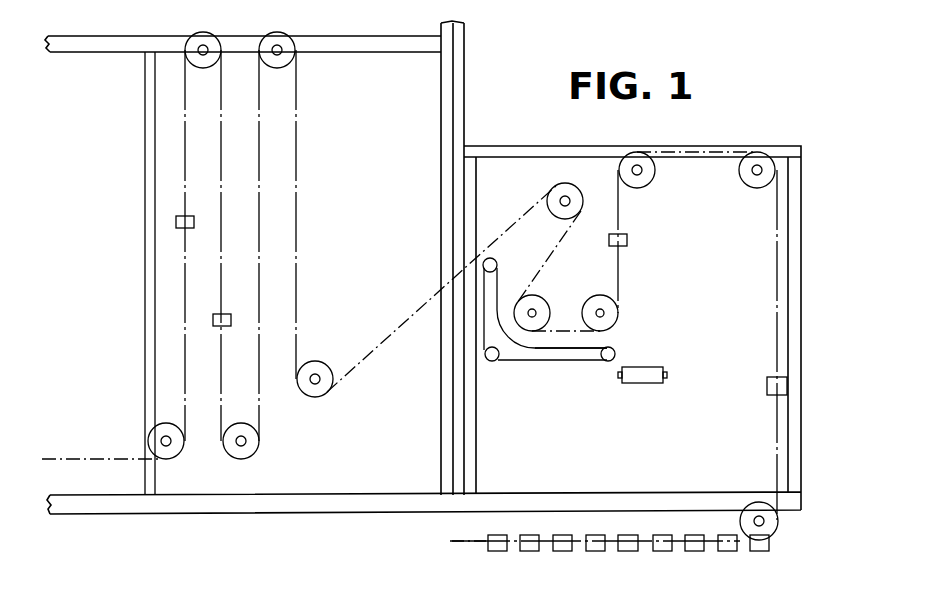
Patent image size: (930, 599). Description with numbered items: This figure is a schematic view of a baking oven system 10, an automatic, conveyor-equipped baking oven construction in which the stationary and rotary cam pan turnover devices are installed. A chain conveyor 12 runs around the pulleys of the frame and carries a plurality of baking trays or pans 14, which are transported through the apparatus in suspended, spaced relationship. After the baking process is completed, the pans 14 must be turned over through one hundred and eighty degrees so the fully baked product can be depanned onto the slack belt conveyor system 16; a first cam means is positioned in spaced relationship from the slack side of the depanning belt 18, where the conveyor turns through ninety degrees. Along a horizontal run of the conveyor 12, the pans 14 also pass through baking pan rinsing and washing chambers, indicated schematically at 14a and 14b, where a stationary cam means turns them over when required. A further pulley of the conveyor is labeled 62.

The machine frame / apparatus 10 is at (362, 120).
The pulley 12 is at (298, 352).
The clip carrier on belt 14 is at (627, 241).
The clip on bottom conveyor 14a is at (524, 538).
The clip on bottom conveyor 14b is at (612, 538).
The guide bar 16 is at (568, 363).
The curved guide 18 is at (583, 343).
The bottom conveyor pulley 62 is at (614, 550).